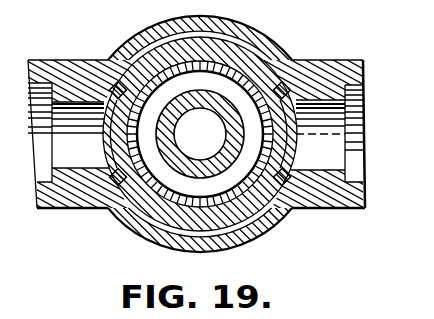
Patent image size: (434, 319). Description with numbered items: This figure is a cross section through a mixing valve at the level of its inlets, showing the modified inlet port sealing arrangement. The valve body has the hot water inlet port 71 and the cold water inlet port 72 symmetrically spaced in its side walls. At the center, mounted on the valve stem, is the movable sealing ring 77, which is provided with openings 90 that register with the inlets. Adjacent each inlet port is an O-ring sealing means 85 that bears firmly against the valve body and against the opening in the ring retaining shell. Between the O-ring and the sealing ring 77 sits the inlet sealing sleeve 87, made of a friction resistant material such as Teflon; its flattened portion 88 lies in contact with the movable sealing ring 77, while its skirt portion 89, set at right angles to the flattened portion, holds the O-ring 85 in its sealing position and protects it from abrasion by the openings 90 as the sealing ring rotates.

The hot water inlet port 71 is at (325, 150).
The cold water inlet port 72 is at (78, 134).
The sealing ring 77 is at (207, 38).
The O-ring sealing means 85 is at (284, 88).
The inlet sealing sleeve 87 is at (100, 157).
The flattened portion 88 is at (240, 93).
The skirt portion 89 is at (364, 100).
The openings 90 is at (293, 172).